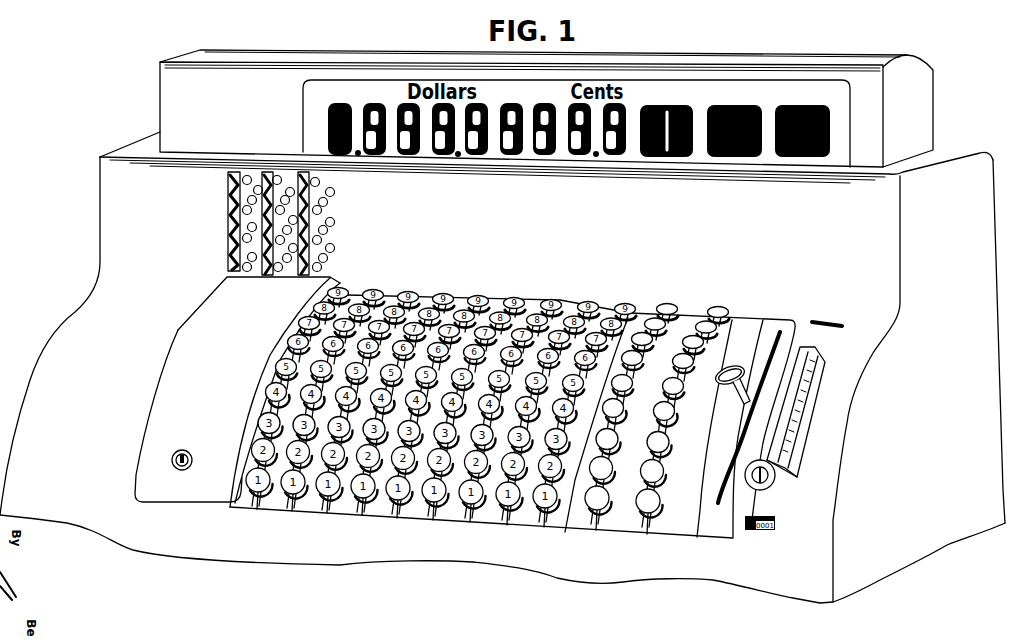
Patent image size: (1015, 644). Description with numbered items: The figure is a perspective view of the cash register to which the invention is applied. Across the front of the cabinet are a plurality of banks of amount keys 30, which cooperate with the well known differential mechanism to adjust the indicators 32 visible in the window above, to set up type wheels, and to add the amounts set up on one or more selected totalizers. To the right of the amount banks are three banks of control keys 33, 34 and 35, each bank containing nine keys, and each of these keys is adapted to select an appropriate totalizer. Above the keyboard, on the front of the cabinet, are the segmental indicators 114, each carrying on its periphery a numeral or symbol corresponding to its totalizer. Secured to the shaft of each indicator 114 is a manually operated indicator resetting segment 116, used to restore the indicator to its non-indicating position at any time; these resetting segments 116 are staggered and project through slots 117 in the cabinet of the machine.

The amount keys 30 is at (345, 295).
The indicators 32 is at (480, 155).
The control keys 33 is at (728, 303).
The control keys 34 is at (672, 303).
The control keys 35 is at (620, 303).
The segmental indicator 114 is at (318, 213).
The indicator resetting segment 116 is at (334, 184).
The slots 117 is at (217, 184).